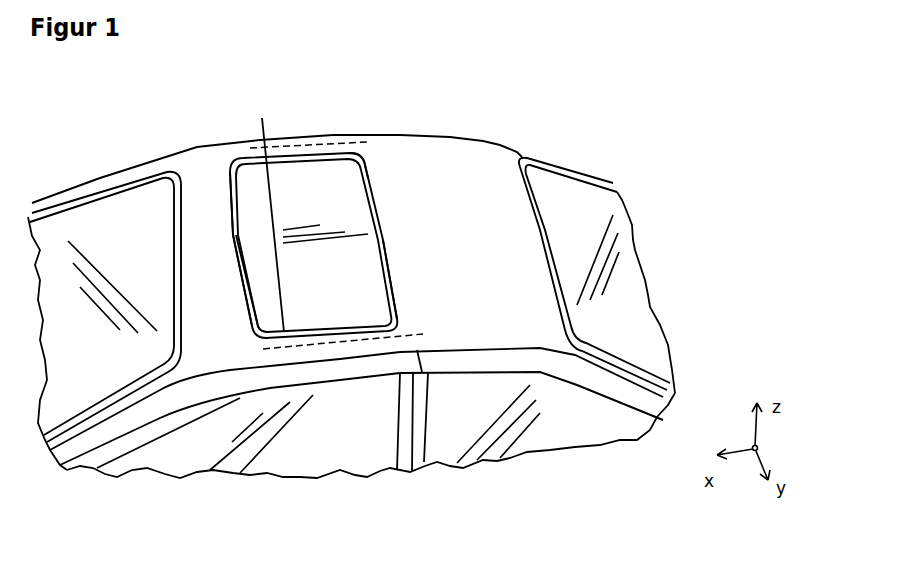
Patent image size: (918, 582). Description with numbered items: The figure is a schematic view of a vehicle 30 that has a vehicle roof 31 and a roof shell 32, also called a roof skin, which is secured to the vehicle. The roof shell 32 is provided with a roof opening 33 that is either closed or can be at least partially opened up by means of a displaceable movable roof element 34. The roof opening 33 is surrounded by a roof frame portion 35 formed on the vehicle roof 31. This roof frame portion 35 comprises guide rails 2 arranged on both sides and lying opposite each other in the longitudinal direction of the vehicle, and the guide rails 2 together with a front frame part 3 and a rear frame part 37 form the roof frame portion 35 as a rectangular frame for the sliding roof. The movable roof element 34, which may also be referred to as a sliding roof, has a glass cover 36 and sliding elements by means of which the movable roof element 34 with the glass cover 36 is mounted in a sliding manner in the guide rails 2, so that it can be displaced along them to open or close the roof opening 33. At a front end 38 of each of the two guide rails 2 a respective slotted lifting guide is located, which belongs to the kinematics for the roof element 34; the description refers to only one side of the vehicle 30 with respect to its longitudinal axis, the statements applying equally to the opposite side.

The guide rail 2 is at (305, 142).
The front frame part 3 is at (267, 212).
The vehicle 30 is at (608, 136).
The vehicle roof 31 is at (445, 137).
The roof shell 32 is at (212, 164).
The roof opening 33 is at (262, 302).
The movable roof element 34 is at (337, 200).
The roof frame portion 35 is at (238, 274).
The glass cover 36 is at (389, 278).
The rear frame part 37 is at (350, 170).
The front end 38 is at (235, 147).